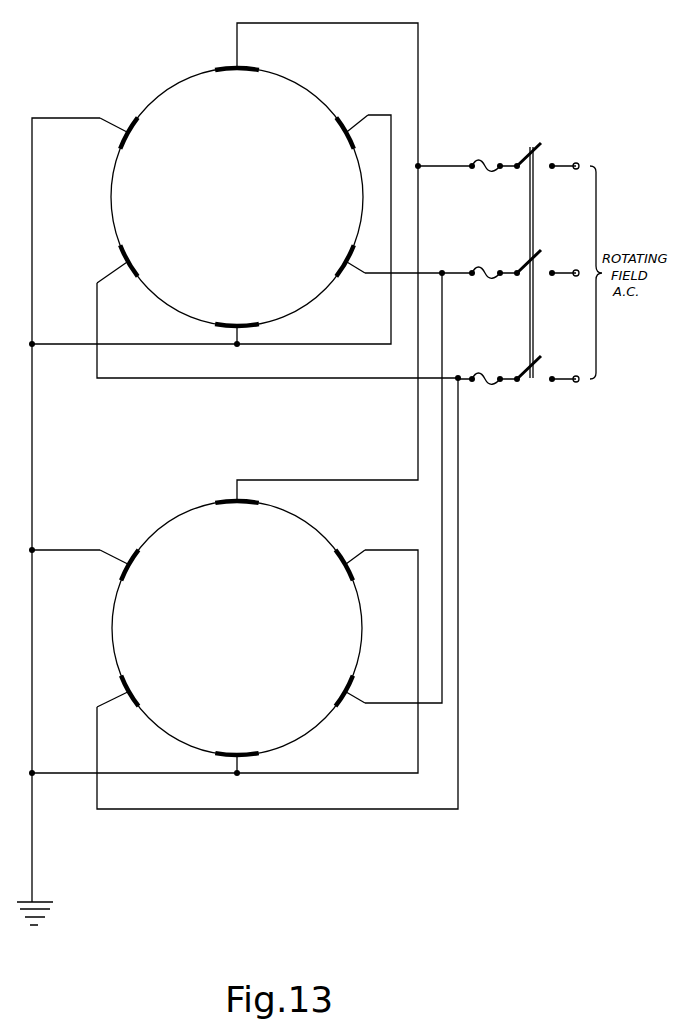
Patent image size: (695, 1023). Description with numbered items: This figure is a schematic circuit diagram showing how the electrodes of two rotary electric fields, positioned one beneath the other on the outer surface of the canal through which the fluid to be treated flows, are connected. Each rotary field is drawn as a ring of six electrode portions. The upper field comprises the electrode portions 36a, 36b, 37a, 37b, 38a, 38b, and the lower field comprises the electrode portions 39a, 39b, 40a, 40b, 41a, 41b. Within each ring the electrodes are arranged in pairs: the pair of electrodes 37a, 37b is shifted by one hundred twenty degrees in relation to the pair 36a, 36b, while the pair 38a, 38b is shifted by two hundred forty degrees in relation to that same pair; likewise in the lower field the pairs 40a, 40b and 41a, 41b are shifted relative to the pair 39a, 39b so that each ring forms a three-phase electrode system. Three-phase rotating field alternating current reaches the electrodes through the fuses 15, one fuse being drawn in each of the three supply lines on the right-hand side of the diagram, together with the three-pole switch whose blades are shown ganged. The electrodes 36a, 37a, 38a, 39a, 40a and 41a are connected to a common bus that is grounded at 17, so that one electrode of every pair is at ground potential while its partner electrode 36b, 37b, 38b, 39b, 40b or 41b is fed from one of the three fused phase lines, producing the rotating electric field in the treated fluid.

The fuses 15 is at (478, 408).
The ground 17 is at (45, 917).
The electrode portion 36a is at (257, 296).
The electrode portion 36b is at (248, 72).
The electrode portion 37a is at (128, 141).
The electrode portion 37b is at (341, 270).
The electrode portion 38a is at (345, 130).
The electrode portion 38b is at (133, 258).
The electrode portion 39a is at (237, 753).
The electrode portion 39b is at (243, 504).
The electrode portion 40a is at (126, 571).
The electrode portion 40b is at (338, 698).
The electrode portion 41a is at (343, 563).
The electrode portion 41b is at (133, 693).